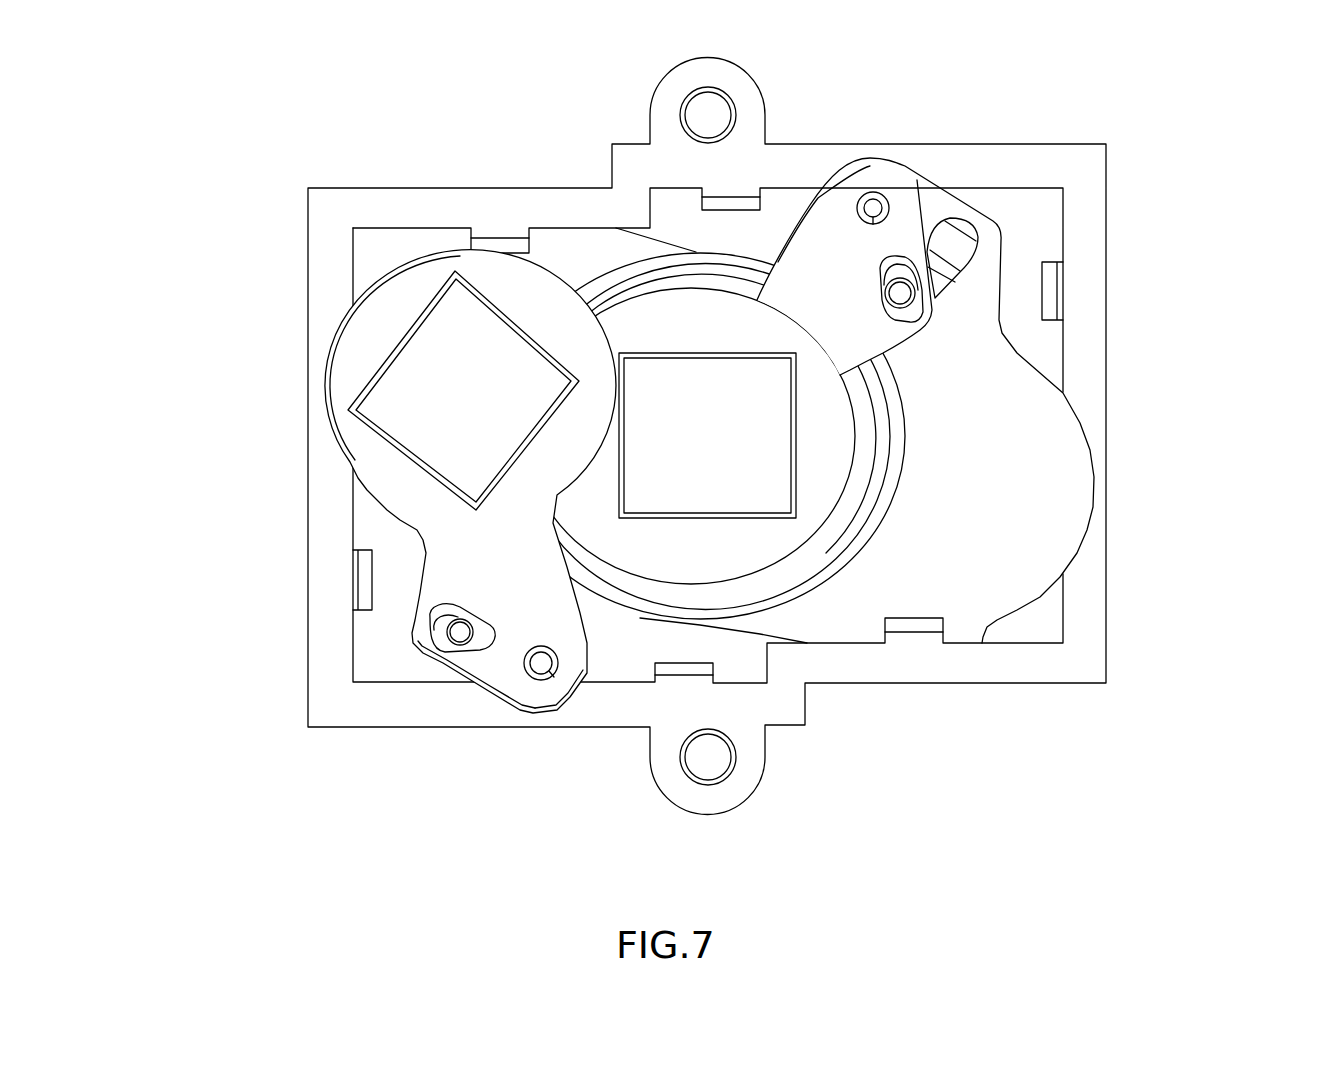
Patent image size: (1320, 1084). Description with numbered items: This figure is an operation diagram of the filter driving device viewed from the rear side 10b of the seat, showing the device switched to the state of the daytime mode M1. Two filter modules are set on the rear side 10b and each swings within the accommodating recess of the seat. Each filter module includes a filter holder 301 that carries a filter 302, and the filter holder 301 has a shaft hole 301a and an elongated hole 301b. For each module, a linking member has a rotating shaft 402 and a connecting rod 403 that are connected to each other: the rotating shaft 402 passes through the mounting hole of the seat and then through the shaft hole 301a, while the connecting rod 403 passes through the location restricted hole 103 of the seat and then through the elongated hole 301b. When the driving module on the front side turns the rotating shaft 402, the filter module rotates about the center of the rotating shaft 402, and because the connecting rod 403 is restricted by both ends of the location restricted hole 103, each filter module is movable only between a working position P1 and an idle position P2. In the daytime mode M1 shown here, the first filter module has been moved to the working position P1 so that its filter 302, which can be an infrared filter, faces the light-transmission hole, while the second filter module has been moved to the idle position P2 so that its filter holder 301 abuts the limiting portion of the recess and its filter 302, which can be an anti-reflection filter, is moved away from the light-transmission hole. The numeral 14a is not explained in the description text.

The daytime mode M1 is at (280, 145).
The rear side 10b is at (1065, 168).
The location restricted hole 103 is at (975, 262).
The lens ring 14a is at (338, 330).
The filter holder 301 is at (367, 345).
The filter 302 is at (443, 410).
The shaft hole 301a is at (557, 667).
The elongated hole 301b is at (478, 657).
The rotating shaft 402 is at (541, 667).
The connecting rod 403 is at (452, 633).
The working position P1 is at (902, 220).
The idle position P2 is at (395, 298).